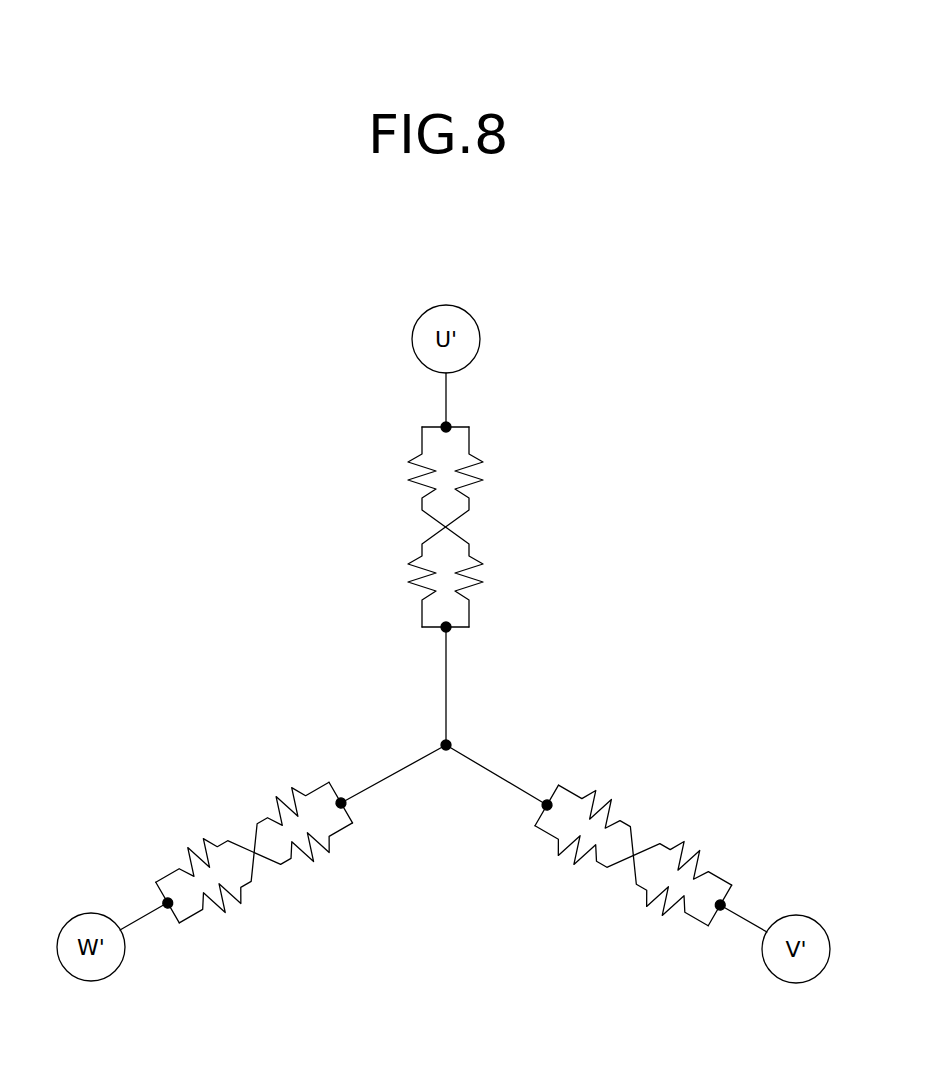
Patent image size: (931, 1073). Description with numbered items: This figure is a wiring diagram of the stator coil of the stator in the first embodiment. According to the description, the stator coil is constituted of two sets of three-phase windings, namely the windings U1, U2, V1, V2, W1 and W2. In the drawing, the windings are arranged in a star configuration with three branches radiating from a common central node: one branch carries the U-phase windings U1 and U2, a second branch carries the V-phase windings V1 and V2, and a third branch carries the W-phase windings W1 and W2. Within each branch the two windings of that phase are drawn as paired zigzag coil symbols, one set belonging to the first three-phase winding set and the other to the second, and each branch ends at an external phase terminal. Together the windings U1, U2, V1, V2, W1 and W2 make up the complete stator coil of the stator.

The winding U1 is at (492, 522).
The winding U2 is at (388, 522).
The winding V1 is at (660, 810).
The winding V2 is at (613, 900).
The winding W1 is at (232, 806).
The winding W2 is at (284, 902).